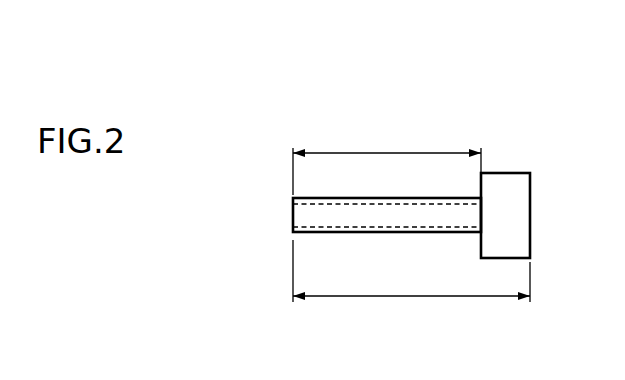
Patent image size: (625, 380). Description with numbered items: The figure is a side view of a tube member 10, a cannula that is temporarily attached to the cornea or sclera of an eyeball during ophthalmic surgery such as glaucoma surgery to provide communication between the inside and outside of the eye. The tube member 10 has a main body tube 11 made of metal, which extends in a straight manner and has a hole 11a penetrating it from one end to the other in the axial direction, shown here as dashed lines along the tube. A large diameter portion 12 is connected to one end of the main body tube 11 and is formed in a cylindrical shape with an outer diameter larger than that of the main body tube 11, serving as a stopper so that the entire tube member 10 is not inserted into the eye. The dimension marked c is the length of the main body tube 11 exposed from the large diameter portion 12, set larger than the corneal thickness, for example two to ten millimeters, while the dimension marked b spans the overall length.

The tube member 10 is at (318, 128).
The main body tube 11 is at (390, 198).
The hole 11a is at (398, 229).
The large diameter portion 12 is at (505, 181).